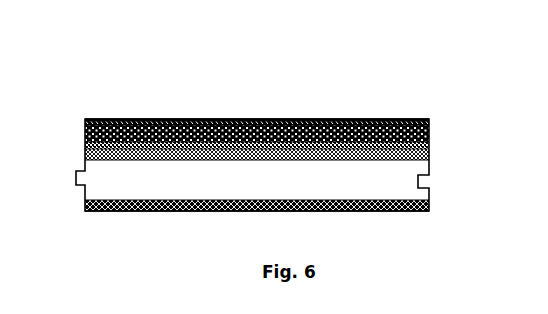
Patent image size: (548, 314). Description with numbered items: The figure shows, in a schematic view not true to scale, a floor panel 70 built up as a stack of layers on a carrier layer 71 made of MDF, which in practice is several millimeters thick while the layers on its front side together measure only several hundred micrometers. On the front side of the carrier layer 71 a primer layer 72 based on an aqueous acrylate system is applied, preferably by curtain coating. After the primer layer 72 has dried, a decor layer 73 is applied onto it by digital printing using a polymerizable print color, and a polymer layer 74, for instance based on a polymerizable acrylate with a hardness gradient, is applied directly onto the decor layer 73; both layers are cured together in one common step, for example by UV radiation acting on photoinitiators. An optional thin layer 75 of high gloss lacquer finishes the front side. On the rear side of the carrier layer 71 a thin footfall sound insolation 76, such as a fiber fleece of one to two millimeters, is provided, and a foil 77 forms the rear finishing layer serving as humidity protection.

The laminated panel assembly 70 is at (257, 144).
The carrier layer 71 is at (413, 190).
The primer layer 72 is at (429, 150).
The decor layer 73 is at (429, 142).
The polymer layer 74 is at (429, 130).
The thin layer of high gloss lacquer 75 is at (285, 119).
The footfall sound insolation 76 is at (83, 205).
The foil 77 is at (122, 210).